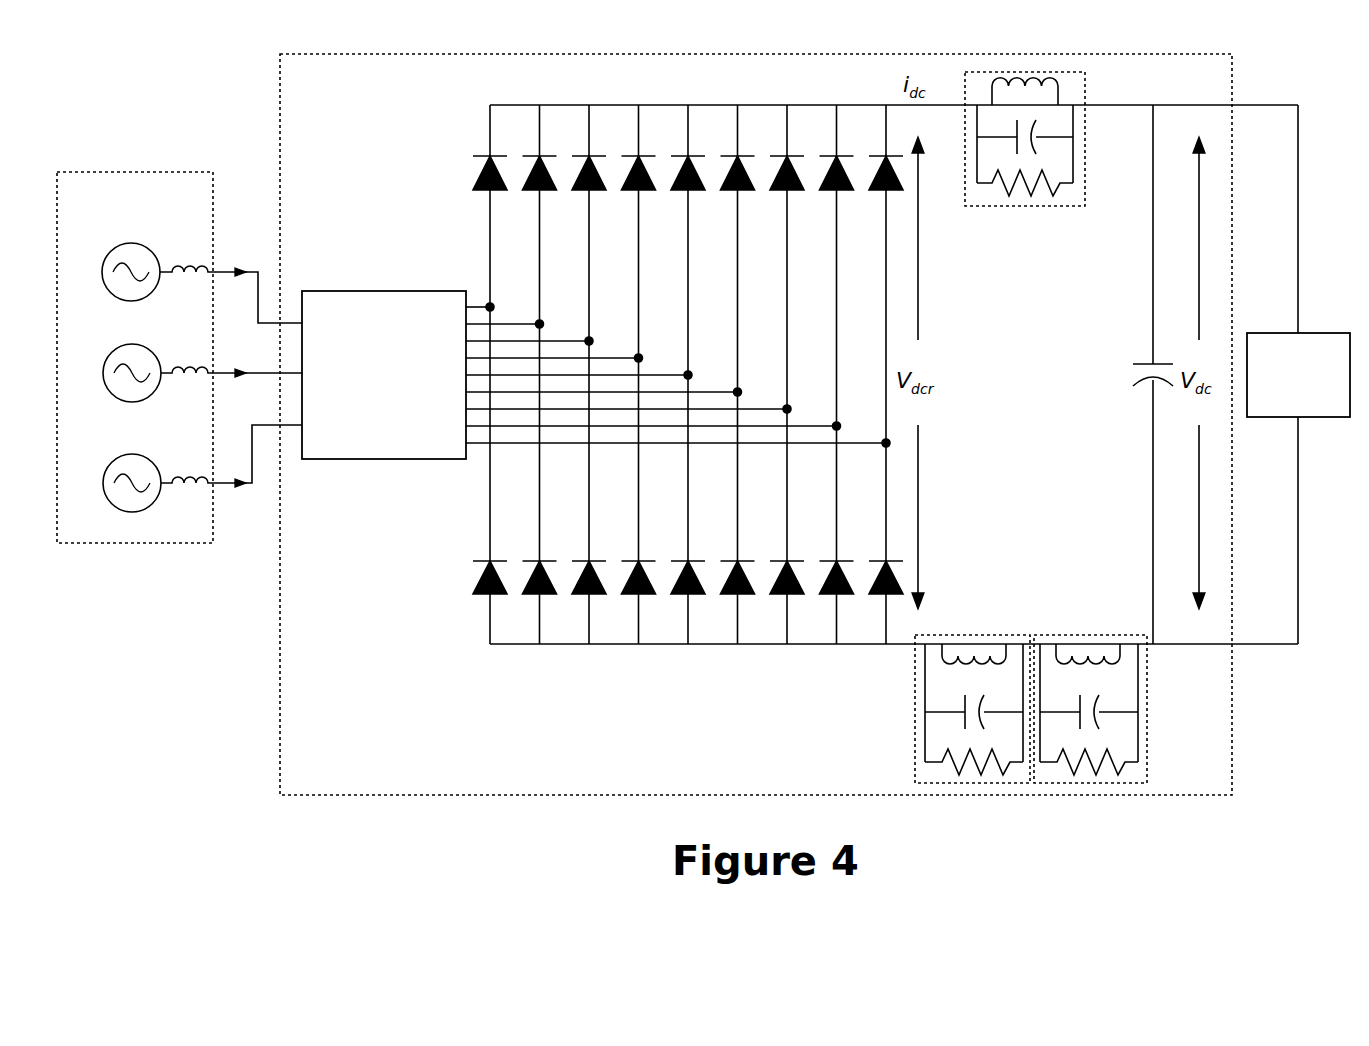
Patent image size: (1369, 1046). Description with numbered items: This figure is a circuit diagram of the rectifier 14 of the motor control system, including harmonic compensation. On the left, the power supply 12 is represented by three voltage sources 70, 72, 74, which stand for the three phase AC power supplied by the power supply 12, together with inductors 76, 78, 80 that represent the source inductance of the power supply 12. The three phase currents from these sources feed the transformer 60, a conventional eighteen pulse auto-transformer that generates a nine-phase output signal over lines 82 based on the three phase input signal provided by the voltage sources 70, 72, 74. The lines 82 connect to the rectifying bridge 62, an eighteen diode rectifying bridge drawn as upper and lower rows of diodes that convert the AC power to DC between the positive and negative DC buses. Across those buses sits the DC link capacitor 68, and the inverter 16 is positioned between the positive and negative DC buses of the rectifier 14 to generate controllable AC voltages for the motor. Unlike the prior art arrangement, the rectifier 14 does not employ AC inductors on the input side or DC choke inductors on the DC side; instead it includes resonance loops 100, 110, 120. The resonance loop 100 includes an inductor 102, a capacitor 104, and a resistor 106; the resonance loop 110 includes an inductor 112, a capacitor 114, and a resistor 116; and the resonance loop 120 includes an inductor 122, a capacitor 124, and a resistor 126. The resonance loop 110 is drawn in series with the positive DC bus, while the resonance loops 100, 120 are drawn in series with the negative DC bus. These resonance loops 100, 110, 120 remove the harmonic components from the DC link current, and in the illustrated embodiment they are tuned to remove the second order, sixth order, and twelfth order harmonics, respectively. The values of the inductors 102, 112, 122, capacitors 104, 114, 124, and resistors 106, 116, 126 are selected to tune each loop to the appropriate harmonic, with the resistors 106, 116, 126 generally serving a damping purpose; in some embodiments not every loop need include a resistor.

The power supply 12 is at (148, 172).
The rectifier 14 is at (280, 106).
The inverter 16 is at (1298, 374).
The transformer 60 is at (384, 375).
The rectifying bridge 62 is at (448, 200).
The DC link capacitor 68 is at (1145, 364).
The voltage source 70 is at (102, 278).
The voltage source 72 is at (103, 380).
The voltage source 74 is at (103, 490).
The inductor 76 is at (188, 262).
The inductor 78 is at (188, 363).
The inductor 80 is at (188, 473).
The lines 82 is at (478, 460).
The resonance loop 100 is at (938, 681).
The inductor 102 is at (942, 660).
The capacitor 104 is at (938, 712).
The resistor 106 is at (938, 762).
The resonance loop 110 is at (1055, 164).
The inductor 112 is at (1062, 90).
The capacitor 114 is at (1062, 137).
The resistor 116 is at (1062, 183).
The resonance loop 120 is at (1127, 681).
The inductor 122 is at (1122, 660).
The capacitor 124 is at (1125, 712).
The resistor 126 is at (1125, 762).